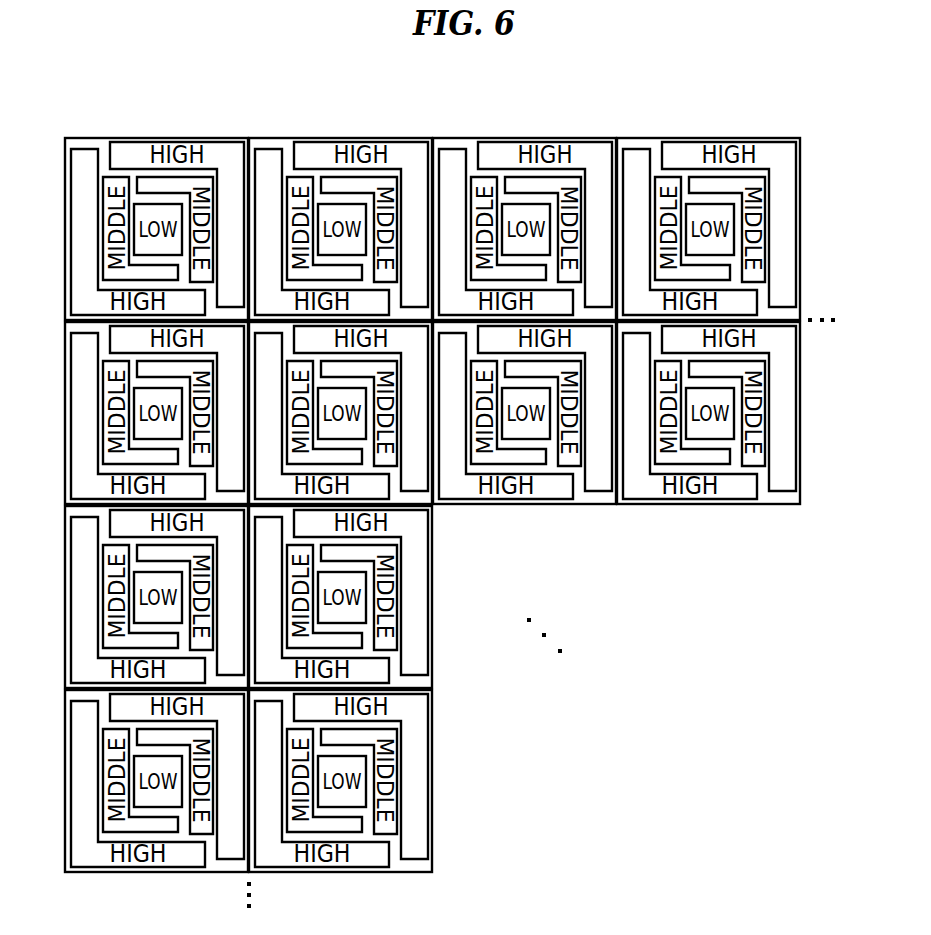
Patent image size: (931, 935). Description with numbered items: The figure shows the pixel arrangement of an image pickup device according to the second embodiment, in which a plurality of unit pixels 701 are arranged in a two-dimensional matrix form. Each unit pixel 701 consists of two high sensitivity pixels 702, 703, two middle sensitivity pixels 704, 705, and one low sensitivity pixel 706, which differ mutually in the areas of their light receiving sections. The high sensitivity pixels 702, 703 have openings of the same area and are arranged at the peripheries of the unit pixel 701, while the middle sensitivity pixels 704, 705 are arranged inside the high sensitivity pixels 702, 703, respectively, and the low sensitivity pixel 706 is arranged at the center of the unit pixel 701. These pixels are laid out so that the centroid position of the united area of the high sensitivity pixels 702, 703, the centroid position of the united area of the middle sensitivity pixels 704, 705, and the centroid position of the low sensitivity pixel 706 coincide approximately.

The unit pixel 701 is at (173, 138).
The high sensitivity pixel 702 is at (83, 149).
The high sensitivity pixel 703 is at (228, 142).
The middle sensitivity pixel 704 is at (117, 177).
The middle sensitivity pixel 705 is at (208, 177).
The low sensitivity pixel 706 is at (157, 203).